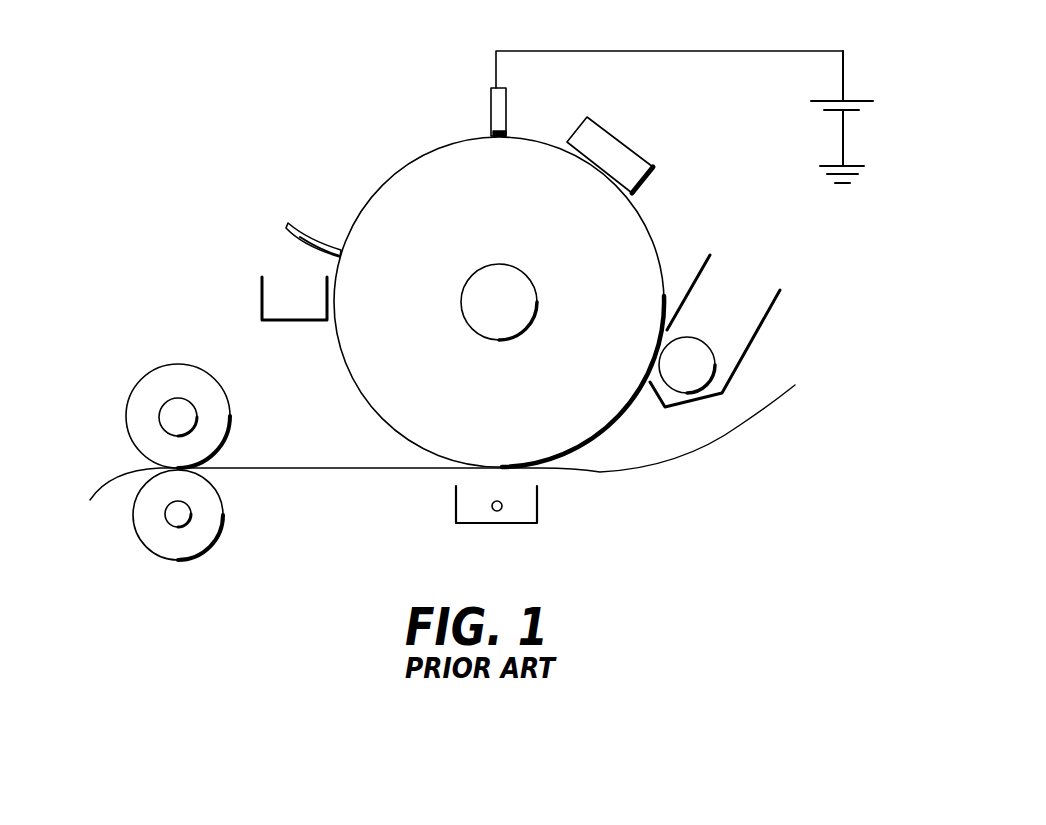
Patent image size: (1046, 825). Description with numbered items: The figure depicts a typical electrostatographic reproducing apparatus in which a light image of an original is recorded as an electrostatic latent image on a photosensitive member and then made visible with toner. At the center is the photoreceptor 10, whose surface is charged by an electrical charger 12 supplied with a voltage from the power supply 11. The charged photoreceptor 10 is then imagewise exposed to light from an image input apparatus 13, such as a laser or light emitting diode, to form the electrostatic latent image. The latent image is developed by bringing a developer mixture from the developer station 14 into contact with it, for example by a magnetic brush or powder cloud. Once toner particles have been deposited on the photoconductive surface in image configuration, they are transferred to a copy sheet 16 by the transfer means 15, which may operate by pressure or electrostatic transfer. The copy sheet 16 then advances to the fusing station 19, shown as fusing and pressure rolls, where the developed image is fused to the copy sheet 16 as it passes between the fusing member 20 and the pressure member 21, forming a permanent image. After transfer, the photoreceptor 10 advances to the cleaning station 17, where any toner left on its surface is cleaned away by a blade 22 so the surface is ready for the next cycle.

The photoreceptor 10 is at (652, 232).
The power supply 11 is at (843, 74).
The electrical charger 12 is at (500, 120).
The image input apparatus 13 is at (628, 158).
The developer station 14 is at (722, 302).
The transfer means 15 is at (537, 520).
The copy sheet 16 is at (745, 423).
The cleaning station 17 is at (279, 251).
The fusing station 19 is at (110, 421).
The fusing member 20 is at (221, 400).
The pressure member 21 is at (215, 520).
The blade 22 is at (308, 240).